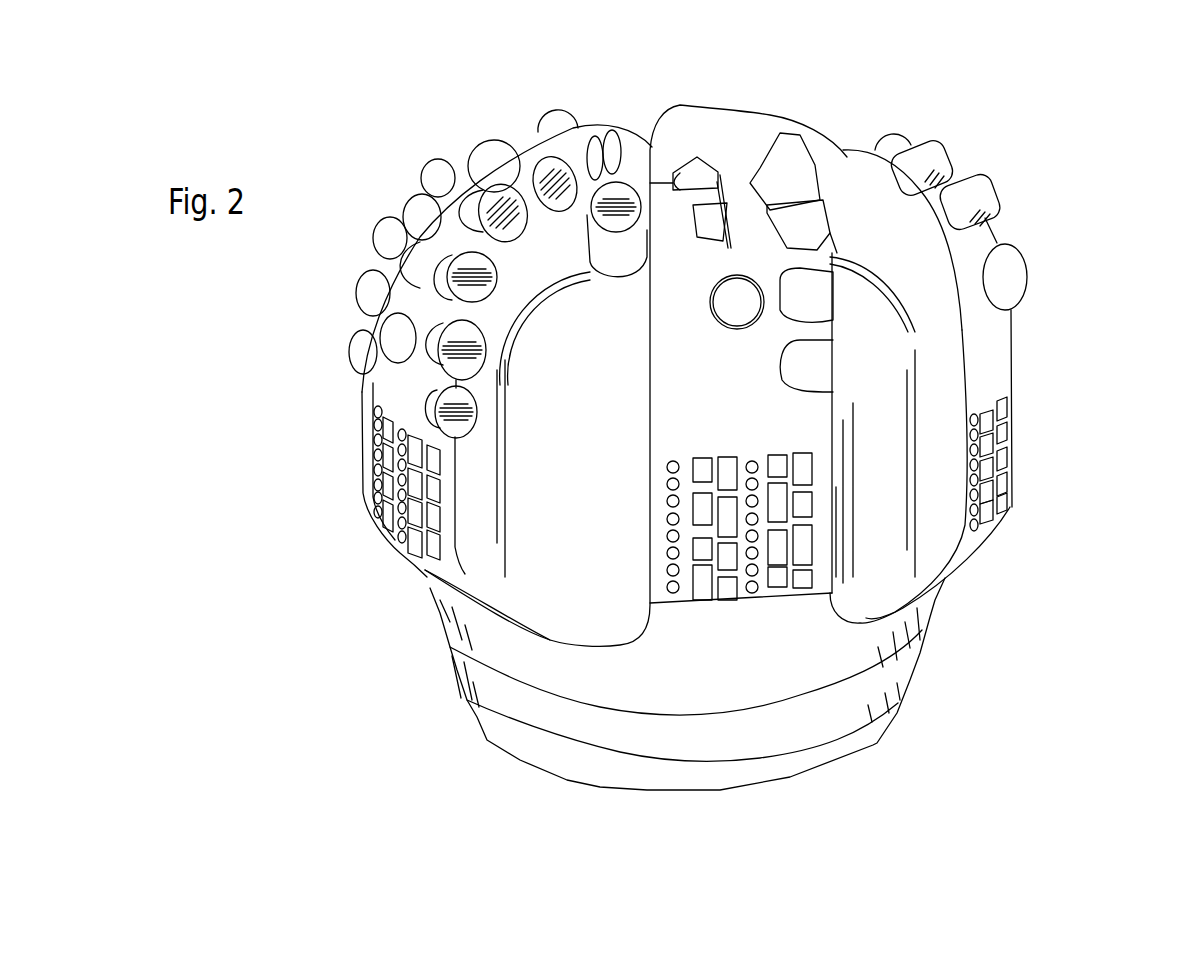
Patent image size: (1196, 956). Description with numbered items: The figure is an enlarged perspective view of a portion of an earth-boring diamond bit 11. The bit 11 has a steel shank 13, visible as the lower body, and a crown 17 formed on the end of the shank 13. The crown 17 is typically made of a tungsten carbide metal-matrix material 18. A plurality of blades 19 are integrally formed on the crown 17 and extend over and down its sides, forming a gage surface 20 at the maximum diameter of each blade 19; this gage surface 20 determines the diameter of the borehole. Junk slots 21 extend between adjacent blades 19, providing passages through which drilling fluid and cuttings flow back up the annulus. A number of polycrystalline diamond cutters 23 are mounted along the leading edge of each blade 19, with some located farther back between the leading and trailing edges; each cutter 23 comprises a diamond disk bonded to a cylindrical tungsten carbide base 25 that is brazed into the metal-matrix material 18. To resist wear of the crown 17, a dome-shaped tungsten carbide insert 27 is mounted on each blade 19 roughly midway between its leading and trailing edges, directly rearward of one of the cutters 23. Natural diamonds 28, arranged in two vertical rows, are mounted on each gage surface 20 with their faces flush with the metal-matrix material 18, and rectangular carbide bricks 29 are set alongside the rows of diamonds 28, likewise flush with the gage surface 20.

The bit 11 is at (1097, 142).
The shank 13 is at (485, 687).
The crown 17 is at (1052, 292).
The metal-matrix material 18 is at (747, 425).
The blades 19 is at (1010, 407).
The gage surface 20 is at (985, 370).
The junk slots 21 is at (885, 497).
The polycrystalline diamond cutters 23 is at (447, 273).
The tungsten carbide base 25 is at (833, 350).
The tungsten carbide insert 27 is at (740, 303).
The natural diamonds 28 is at (670, 502).
The carbide bricks 29 is at (780, 587).